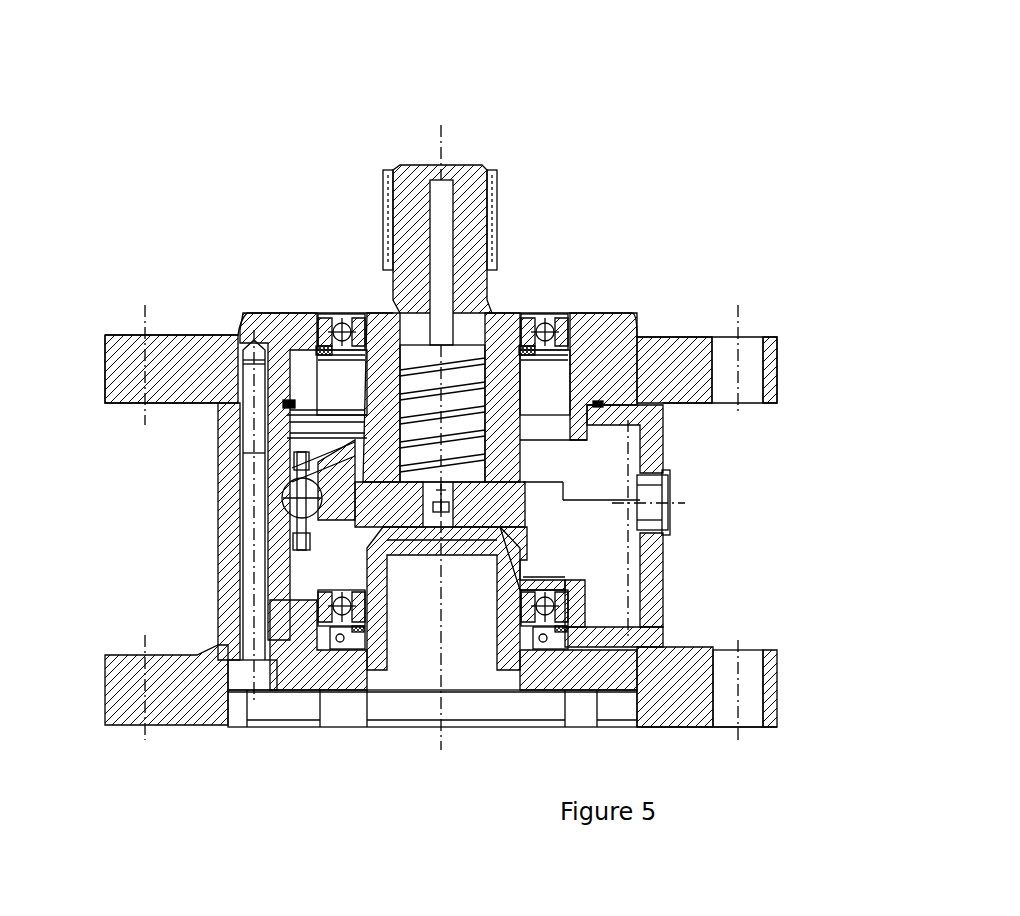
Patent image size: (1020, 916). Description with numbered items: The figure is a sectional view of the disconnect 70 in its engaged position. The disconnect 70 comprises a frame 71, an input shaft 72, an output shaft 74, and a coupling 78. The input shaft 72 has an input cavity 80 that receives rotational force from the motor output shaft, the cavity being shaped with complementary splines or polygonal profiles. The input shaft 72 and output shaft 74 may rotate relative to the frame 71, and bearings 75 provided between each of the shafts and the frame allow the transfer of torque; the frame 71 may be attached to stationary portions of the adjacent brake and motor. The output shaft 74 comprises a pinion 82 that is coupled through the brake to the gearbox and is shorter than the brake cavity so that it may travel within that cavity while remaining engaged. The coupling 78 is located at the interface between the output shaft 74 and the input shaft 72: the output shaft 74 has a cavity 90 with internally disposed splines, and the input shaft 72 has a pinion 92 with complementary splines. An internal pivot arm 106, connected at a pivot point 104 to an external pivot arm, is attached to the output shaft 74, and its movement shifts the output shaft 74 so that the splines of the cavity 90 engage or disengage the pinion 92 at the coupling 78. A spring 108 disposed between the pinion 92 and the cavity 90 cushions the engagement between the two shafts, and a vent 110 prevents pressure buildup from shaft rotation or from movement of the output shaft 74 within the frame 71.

The disconnect 70 is at (738, 190).
The frame 71 is at (232, 610).
The input shaft 72 is at (523, 577).
The output shaft 74 is at (508, 340).
The bearings 75 is at (552, 340).
The coupling 78 is at (665, 505).
The input cavity 80 is at (490, 617).
The pinion 82 is at (393, 165).
The cavity 90 is at (360, 495).
The pinion 92 is at (520, 440).
The pivot point 104 is at (240, 492).
The internal pivot arm 106 is at (355, 468).
The spring 108 is at (455, 375).
The vent 110 is at (672, 480).